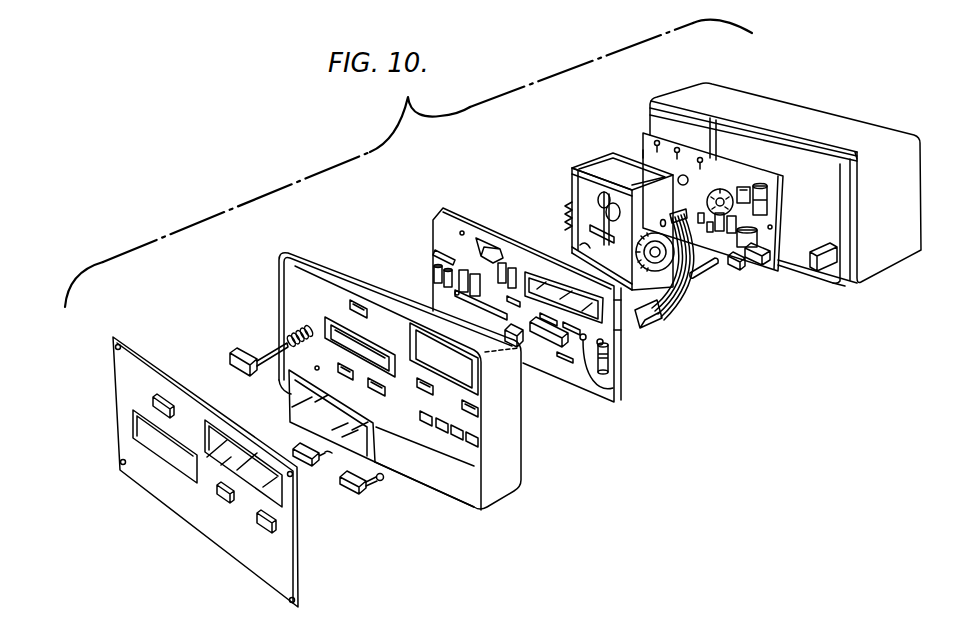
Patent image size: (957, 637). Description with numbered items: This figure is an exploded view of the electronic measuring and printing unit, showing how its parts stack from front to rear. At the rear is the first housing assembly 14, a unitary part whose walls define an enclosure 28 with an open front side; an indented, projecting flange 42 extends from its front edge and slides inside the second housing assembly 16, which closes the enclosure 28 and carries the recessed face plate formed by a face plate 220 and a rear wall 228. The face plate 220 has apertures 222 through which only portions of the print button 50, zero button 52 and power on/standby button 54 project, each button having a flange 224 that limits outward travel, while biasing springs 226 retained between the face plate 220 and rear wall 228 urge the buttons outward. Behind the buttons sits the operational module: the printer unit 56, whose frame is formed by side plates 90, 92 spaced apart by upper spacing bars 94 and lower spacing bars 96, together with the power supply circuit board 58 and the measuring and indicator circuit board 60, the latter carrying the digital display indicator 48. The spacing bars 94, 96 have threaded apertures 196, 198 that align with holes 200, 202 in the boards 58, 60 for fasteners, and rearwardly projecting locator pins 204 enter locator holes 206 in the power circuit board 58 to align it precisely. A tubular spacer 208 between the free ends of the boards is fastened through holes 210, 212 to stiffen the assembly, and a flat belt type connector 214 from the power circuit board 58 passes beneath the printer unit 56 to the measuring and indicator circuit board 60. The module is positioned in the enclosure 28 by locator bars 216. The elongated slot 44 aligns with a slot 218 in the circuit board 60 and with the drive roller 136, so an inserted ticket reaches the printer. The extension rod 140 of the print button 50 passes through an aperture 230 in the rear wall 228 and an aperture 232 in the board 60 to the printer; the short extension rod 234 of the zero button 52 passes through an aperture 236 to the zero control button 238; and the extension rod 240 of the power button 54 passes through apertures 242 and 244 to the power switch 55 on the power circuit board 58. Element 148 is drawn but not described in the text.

The first housing assembly 14 is at (918, 204).
The second housing assembly 16 is at (519, 469).
The enclosure 28 is at (808, 166).
The indented, projecting flange 42 is at (833, 150).
The elongated slot 44 is at (373, 343).
The digital display indicator 48 is at (547, 272).
The print button 50 is at (232, 351).
The zero button 52 is at (307, 466).
The power on/standby button 54 is at (348, 494).
The power switch 55 is at (742, 270).
The printer unit 56 is at (558, 161).
The power supply circuit board 58 is at (764, 262).
The measuring and indicator circuit board 60 is at (573, 390).
The side plate 90 is at (610, 163).
The side plate 92 is at (660, 316).
The upper spacing bars 94 is at (618, 157).
The lower spacing bars 96 is at (504, 243).
The drive roller 136 is at (584, 248).
The extension rod 140 is at (272, 352).
The drive wheel 148 is at (661, 236).
The threaded apertures 196 is at (583, 162).
The threaded apertures 198 is at (639, 330).
The holes 200 is at (643, 147).
The holes 202 is at (463, 231).
The locator pins 204 is at (643, 152).
The locator holes 206 is at (680, 137).
The tubular spacer 208 is at (706, 275).
The hole 210 is at (774, 228).
The hole 212 is at (621, 336).
The flat belt type connector 214 is at (688, 280).
The locator bars 216 is at (833, 284).
The slot 218 is at (456, 294).
The face plate 220 is at (292, 574).
The apertures 222 is at (165, 395).
The flange 224 is at (240, 348).
The biasing springs 226 is at (430, 470).
The rear wall 228 is at (474, 460).
The aperture 230 is at (355, 300).
The aperture 232 is at (478, 250).
The short extension rod 234 is at (320, 448).
The aperture 236 is at (418, 383).
The zero control button 238 is at (524, 363).
The extension rod 240 is at (383, 479).
The aperture 242 is at (478, 411).
The aperture 244 is at (614, 389).